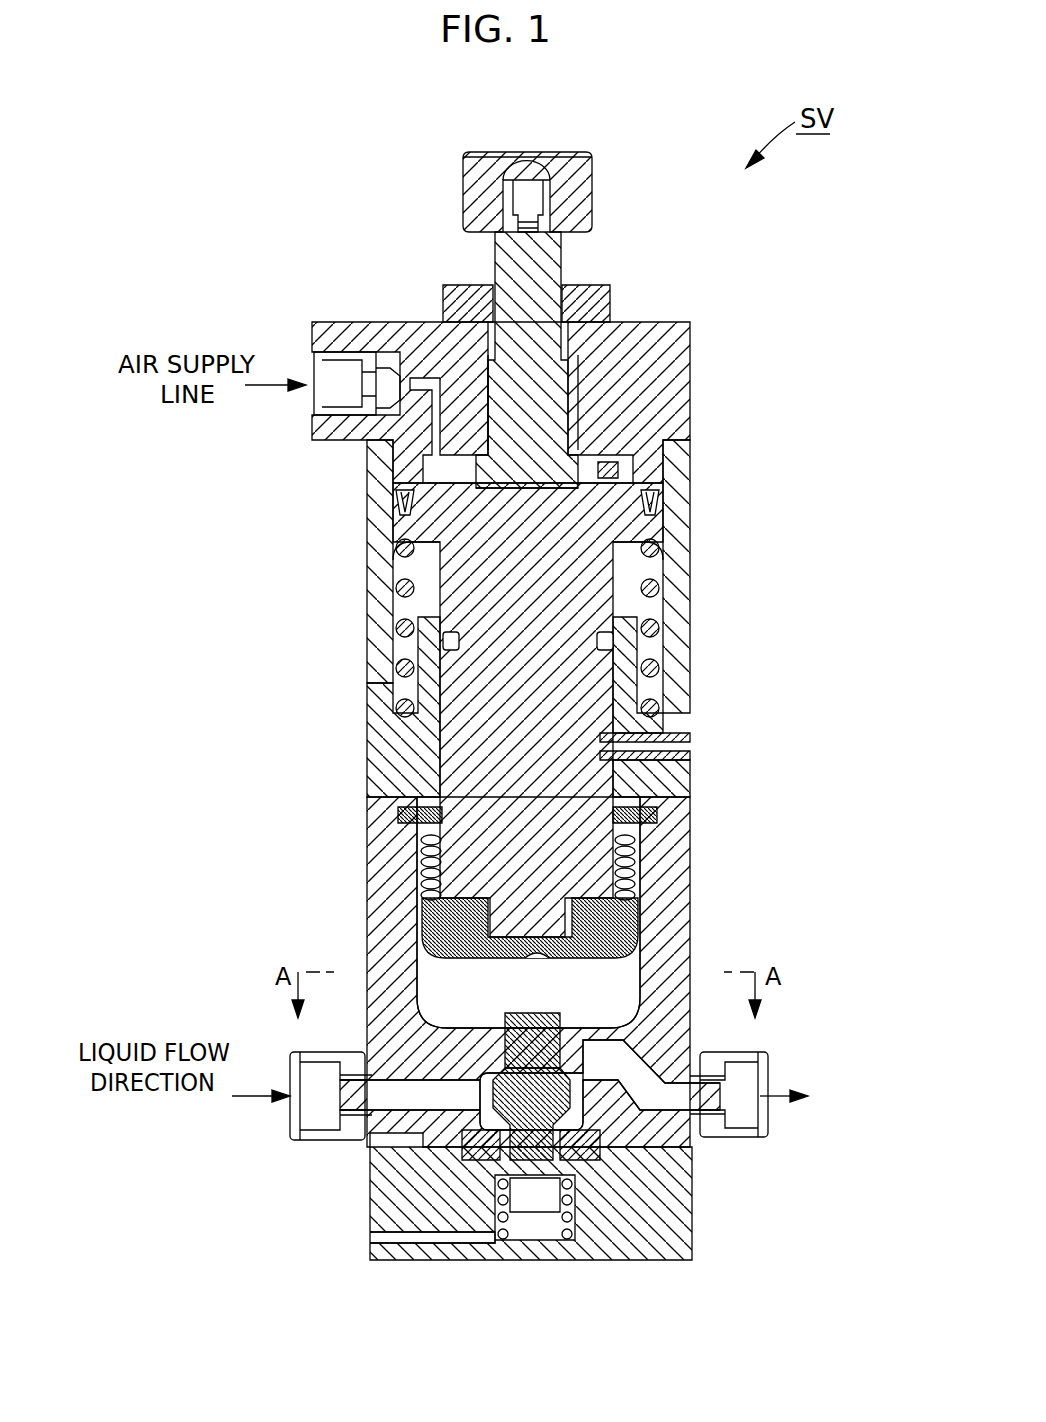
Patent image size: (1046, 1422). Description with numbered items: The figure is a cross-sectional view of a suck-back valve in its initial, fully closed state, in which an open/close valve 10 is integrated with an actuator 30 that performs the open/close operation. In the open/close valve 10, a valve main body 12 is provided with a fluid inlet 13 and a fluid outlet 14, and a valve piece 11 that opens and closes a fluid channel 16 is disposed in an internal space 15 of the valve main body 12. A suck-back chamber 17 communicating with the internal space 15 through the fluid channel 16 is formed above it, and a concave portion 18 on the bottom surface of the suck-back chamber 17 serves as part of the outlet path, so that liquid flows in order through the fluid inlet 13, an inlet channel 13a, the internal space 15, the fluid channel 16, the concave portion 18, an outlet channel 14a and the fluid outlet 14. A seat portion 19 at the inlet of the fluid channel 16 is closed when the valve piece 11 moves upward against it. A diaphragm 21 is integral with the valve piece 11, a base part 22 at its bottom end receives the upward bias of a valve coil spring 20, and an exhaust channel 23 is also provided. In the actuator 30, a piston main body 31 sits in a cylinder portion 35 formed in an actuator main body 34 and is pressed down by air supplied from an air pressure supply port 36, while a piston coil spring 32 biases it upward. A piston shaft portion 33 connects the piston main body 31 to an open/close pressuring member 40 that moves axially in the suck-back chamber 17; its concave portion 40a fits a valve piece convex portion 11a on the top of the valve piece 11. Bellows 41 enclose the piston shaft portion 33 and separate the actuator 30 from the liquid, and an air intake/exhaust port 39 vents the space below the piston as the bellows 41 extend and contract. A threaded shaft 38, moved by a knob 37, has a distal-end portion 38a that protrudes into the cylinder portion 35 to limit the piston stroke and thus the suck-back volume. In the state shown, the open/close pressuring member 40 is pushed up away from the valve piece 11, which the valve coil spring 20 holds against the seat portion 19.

The open/close valve 10 is at (372, 1212).
The valve piece 11 is at (513, 1082).
The valve piece convex portion 11a is at (528, 1052).
The valve main body 12 is at (682, 1132).
The fluid inlet 13 is at (325, 1115).
The inlet channel 13a is at (345, 1105).
The fluid outlet 14 is at (755, 1115).
The outlet channel 14a is at (710, 1100).
The internal space 15 is at (480, 1098).
The fluid channel 16 is at (558, 1044).
The suck-back chamber 17 is at (612, 972).
The concave portion 18 is at (648, 1050).
The seat portion 19 is at (535, 1062).
The valve coil spring 20 is at (522, 1205).
The diaphragm 21 is at (490, 1148).
The base part 22 is at (570, 1215).
The exhaust channel 23 is at (412, 1245).
The actuator 30 is at (690, 524).
The piston main body 31 is at (606, 460).
The piston coil spring 32 is at (660, 592).
The piston shaft portion 33 is at (600, 578).
The actuator main body 34 is at (692, 640).
The cylinder portion 35 is at (622, 452).
The air pressure supply port 36 is at (320, 404).
The knob 37 is at (594, 165).
The threaded shaft 38 is at (548, 264).
The distal-end portion 38a is at (545, 490).
The air intake/exhaust port 39 is at (692, 746).
The open/close pressuring member 40 is at (620, 908).
The concave portion 40a is at (539, 955).
The bellows 41 is at (640, 866).